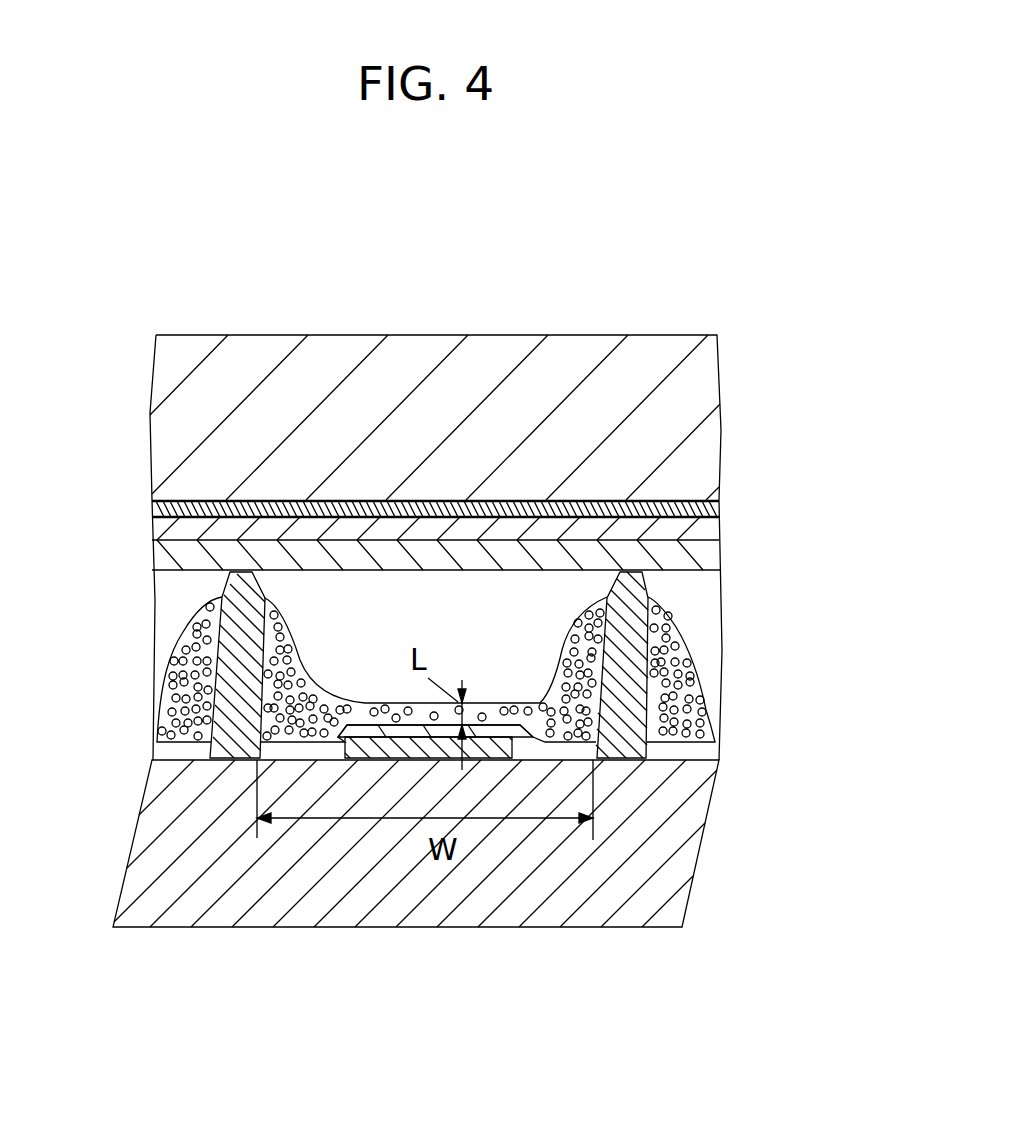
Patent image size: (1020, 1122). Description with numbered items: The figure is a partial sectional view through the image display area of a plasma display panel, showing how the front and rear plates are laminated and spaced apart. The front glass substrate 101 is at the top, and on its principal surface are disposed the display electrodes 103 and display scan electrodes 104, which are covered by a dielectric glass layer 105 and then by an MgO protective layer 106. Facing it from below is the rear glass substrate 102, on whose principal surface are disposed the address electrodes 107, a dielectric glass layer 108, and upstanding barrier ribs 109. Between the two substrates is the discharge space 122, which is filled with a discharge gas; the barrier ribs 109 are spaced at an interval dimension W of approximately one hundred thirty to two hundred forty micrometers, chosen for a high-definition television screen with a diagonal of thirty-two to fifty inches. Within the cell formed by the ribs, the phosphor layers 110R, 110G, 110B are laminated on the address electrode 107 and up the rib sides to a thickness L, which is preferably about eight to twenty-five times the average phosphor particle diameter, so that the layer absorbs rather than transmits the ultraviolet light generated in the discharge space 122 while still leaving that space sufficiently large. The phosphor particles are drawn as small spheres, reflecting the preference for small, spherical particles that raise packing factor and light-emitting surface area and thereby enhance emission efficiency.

The front glass substrate 101 is at (700, 410).
The rear glass substrate 102 is at (688, 840).
The display electrodes 103 is at (510, 493).
The display scan electrodes 104 is at (712, 506).
The dielectric glass layer 105 is at (716, 533).
The MgO protective layer 106 is at (716, 561).
The address electrodes 107 is at (350, 752).
The dielectric glass layer 108 is at (325, 686).
The barrier ribs 109 is at (628, 590).
The phosphor layer (red) 110R is at (167, 678).
The phosphor layer (green) 110G is at (538, 786).
The phosphor layer (blue) 110B is at (707, 708).
The discharge space 122 is at (547, 628).